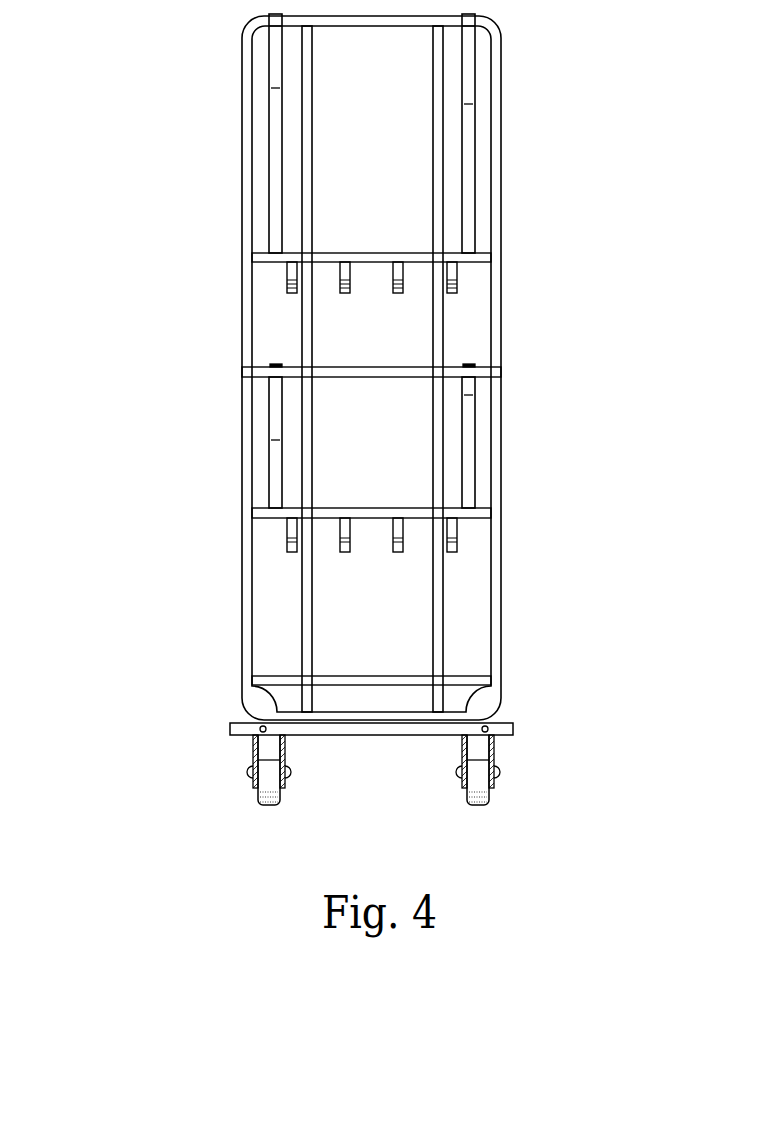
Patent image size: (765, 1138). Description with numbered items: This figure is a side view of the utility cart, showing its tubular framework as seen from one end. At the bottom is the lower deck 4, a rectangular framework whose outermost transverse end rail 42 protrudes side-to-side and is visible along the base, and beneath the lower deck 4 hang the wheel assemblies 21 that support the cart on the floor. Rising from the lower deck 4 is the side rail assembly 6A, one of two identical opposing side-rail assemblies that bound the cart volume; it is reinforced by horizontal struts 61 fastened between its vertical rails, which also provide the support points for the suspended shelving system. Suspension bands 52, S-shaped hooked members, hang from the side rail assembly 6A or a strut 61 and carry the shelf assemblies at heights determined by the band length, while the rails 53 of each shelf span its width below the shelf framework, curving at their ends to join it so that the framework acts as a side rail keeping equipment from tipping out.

The lower deck 4 is at (352, 426).
The side rail assembly 6A is at (498, 463).
The suspension band 52 is at (470, 105).
The rail 53 is at (416, 255).
The horizontal strut 61 is at (330, 373).
The transverse end rail 42 is at (364, 737).
The wheel assembly 21 is at (466, 785).